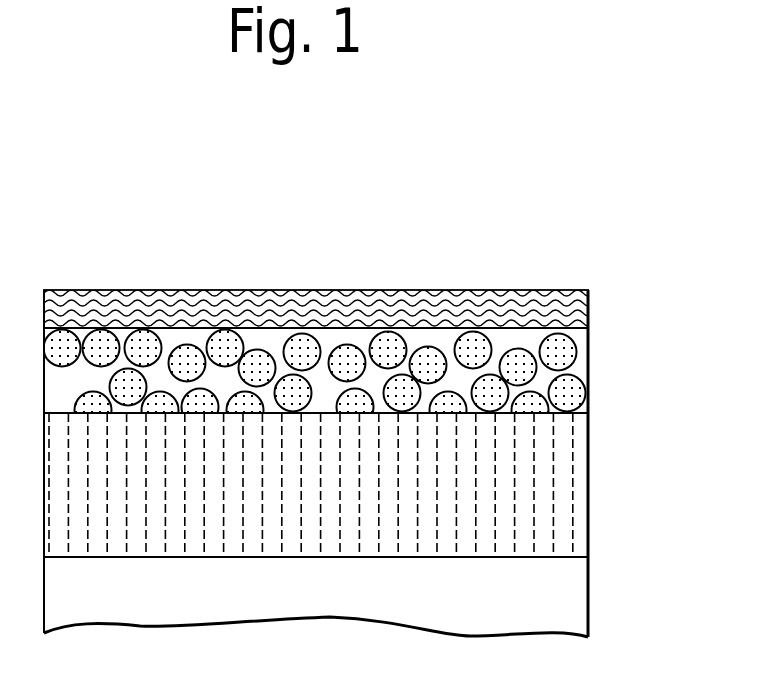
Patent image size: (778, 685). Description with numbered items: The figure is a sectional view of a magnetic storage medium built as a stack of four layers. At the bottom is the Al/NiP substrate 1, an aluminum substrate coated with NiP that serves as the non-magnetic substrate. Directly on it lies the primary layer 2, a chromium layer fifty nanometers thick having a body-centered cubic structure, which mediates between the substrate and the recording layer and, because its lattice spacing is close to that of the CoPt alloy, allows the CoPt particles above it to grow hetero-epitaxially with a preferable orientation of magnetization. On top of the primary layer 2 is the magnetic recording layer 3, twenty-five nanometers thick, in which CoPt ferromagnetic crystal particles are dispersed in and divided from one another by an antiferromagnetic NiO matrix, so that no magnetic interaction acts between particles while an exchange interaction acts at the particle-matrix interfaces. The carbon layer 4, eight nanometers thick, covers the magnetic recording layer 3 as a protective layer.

The Al/NiP substrate 1 is at (570, 596).
The primary layer 2 is at (574, 460).
The magnetic recording layer 3 is at (372, 327).
The carbon layer 4 is at (582, 298).